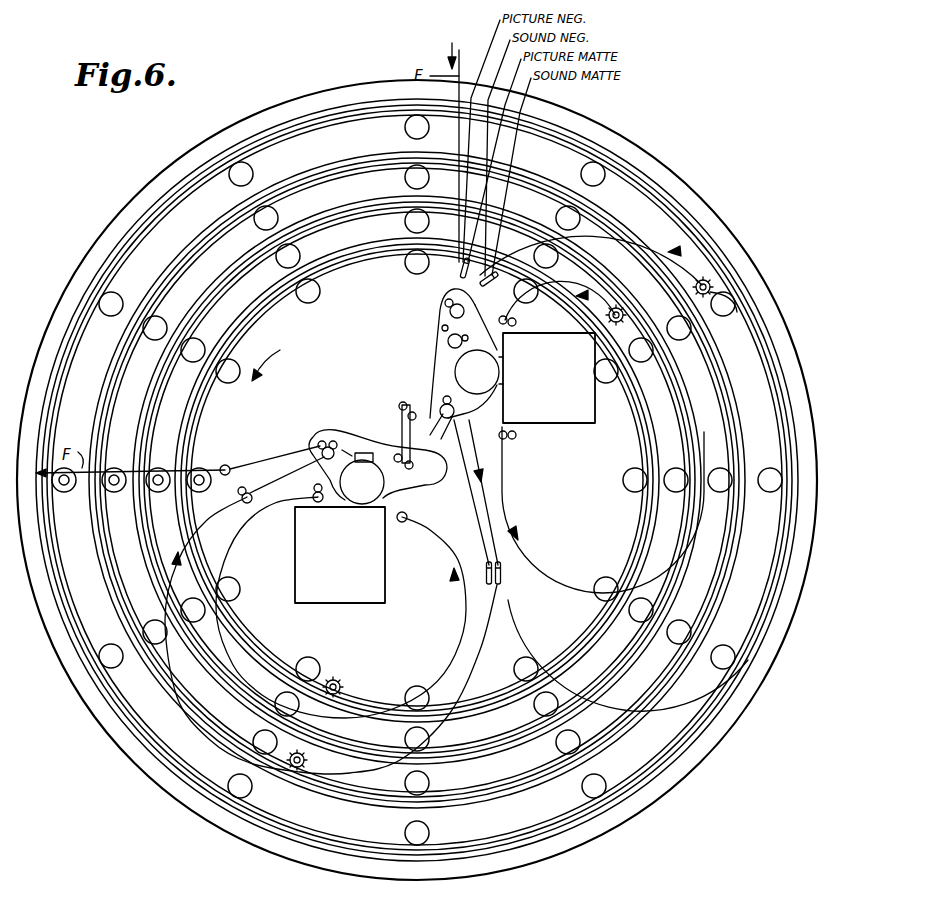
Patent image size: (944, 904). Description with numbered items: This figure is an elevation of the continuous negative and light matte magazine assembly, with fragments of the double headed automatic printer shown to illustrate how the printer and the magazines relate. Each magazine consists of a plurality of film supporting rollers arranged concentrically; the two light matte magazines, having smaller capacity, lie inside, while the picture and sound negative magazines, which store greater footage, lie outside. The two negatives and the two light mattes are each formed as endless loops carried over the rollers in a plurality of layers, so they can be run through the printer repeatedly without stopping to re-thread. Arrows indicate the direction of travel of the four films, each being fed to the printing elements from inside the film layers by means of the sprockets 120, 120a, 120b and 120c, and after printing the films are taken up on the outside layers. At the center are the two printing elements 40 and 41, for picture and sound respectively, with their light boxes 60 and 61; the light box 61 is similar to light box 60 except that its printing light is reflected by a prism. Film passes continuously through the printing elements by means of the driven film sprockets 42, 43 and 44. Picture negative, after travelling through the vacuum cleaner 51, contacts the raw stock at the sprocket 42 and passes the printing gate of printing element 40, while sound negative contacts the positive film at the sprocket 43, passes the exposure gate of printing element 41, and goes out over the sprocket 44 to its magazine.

The printing element 40 is at (443, 347).
The printing element 41 is at (357, 443).
The film sprocket 42 is at (450, 311).
The film sprocket 43 is at (445, 420).
The film sprocket 44 is at (325, 458).
The vacuum cleaner 51 is at (460, 273).
The light box 60 is at (549, 378).
The light box 61 is at (340, 555).
The sprocket 120 is at (711, 284).
The sprocket 120a is at (624, 313).
The sprocket 120b is at (341, 683).
The sprocket 120c is at (304, 755).